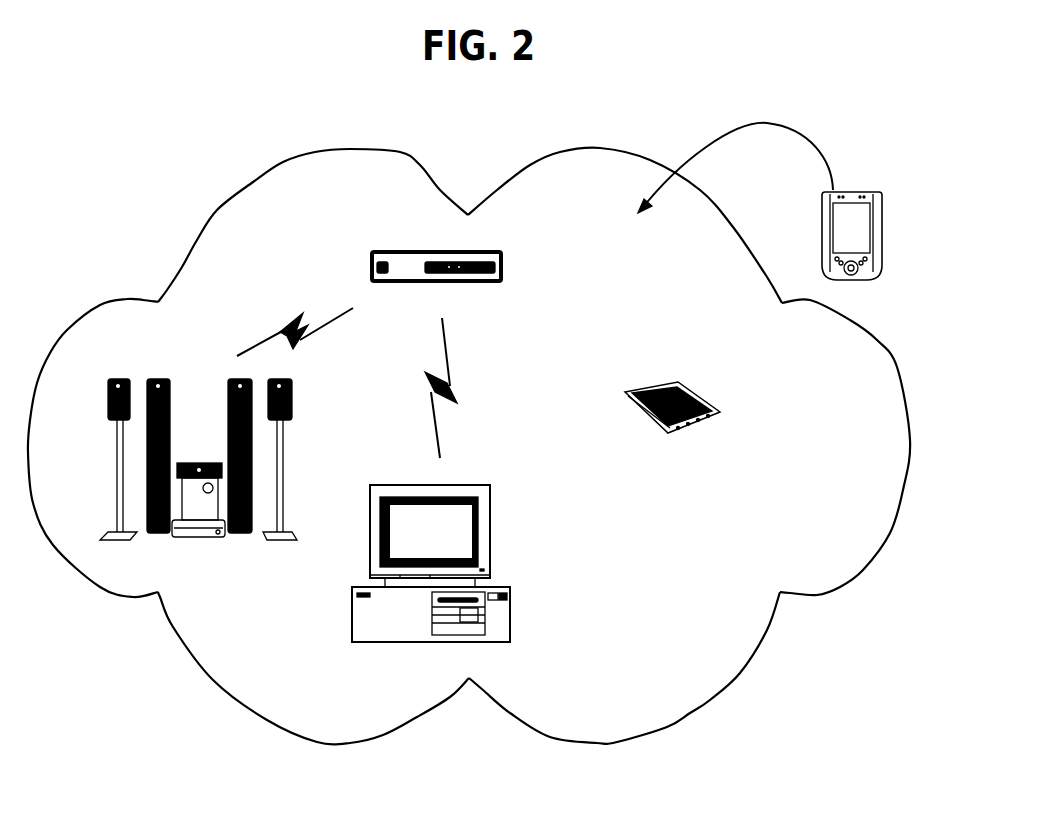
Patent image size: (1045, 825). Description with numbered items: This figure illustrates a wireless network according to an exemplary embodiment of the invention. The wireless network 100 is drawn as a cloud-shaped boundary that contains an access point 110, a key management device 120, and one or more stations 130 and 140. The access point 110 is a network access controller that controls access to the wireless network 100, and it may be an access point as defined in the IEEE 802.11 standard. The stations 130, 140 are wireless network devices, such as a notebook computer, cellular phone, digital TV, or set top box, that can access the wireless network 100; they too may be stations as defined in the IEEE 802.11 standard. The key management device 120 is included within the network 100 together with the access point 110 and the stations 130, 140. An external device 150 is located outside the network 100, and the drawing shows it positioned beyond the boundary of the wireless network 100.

The wireless network 100 is at (570, 152).
The access point 110 is at (395, 250).
The key management device 120 is at (678, 381).
The station 130 is at (492, 507).
The station 140 is at (118, 382).
The external device 150 is at (853, 192).